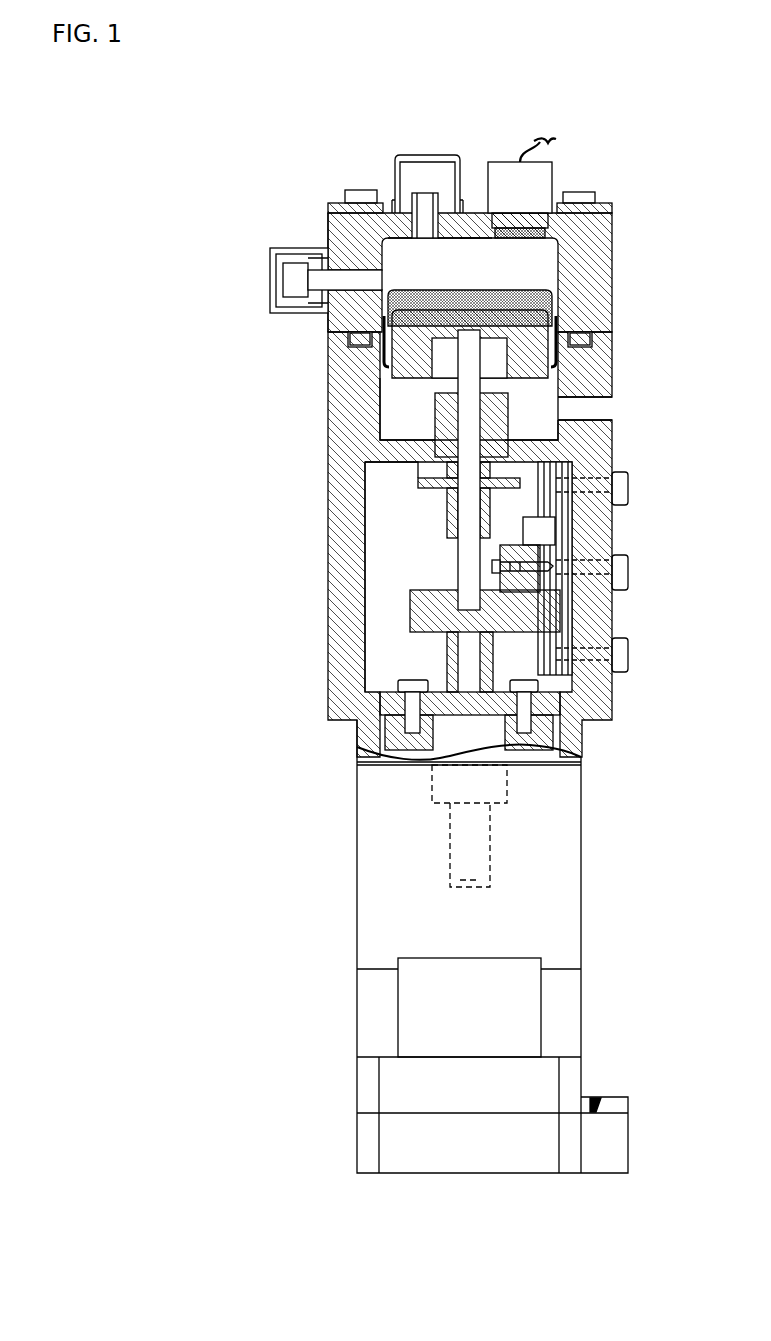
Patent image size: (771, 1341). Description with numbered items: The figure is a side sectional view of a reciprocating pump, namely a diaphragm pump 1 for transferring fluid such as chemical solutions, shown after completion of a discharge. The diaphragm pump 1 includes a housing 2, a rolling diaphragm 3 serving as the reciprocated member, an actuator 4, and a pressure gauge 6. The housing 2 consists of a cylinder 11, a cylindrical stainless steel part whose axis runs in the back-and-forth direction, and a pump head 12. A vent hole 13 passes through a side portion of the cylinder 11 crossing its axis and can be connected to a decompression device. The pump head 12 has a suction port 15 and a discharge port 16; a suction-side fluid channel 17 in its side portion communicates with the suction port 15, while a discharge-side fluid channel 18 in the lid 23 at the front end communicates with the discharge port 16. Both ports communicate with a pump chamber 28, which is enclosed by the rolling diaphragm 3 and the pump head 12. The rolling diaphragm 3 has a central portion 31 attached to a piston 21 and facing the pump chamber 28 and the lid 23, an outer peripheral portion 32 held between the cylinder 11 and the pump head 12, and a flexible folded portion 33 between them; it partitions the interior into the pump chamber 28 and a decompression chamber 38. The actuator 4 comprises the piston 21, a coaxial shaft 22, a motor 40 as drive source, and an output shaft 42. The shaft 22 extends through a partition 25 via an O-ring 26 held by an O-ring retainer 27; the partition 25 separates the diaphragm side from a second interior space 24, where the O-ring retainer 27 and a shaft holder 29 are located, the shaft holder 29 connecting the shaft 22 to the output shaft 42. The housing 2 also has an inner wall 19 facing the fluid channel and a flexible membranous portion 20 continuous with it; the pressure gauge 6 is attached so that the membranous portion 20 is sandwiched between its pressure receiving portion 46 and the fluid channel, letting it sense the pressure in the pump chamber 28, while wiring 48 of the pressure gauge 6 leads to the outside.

The diaphragm pump 1 is at (164, 196).
The housing 2 is at (631, 250).
The rolling diaphragm 3 is at (446, 284).
The actuator 4 is at (598, 879).
The pressure gauge 6 is at (563, 185).
The cylinder 11 is at (612, 360).
The pump head 12 is at (328, 246).
The vent hole 13 is at (583, 405).
The suction port 15 is at (373, 278).
The discharge port 16 is at (423, 235).
The suction-side fluid channel 17 is at (330, 283).
The discharge-side fluid channel 18 is at (432, 200).
The inner wall 19 is at (483, 240).
The membranous portion 20 is at (535, 238).
The piston 21 is at (408, 378).
The shaft 22 is at (458, 548).
The lid 23 is at (467, 208).
The second interior space 24 is at (372, 582).
The partition 25 is at (388, 462).
The O-ring 26 is at (480, 470).
The O-ring retainer 27 is at (446, 505).
The pump chamber 28 is at (562, 289).
The shaft holder 29 is at (410, 612).
The central portion 31 is at (418, 290).
The outer peripheral portion 32 is at (352, 350).
The folded portion 33 is at (380, 380).
The decompression chamber 38 is at (545, 439).
The motor 40 is at (350, 978).
The output shaft 42 is at (445, 660).
The pressure receiving portion 46 is at (516, 238).
The wiring 48 is at (548, 142).